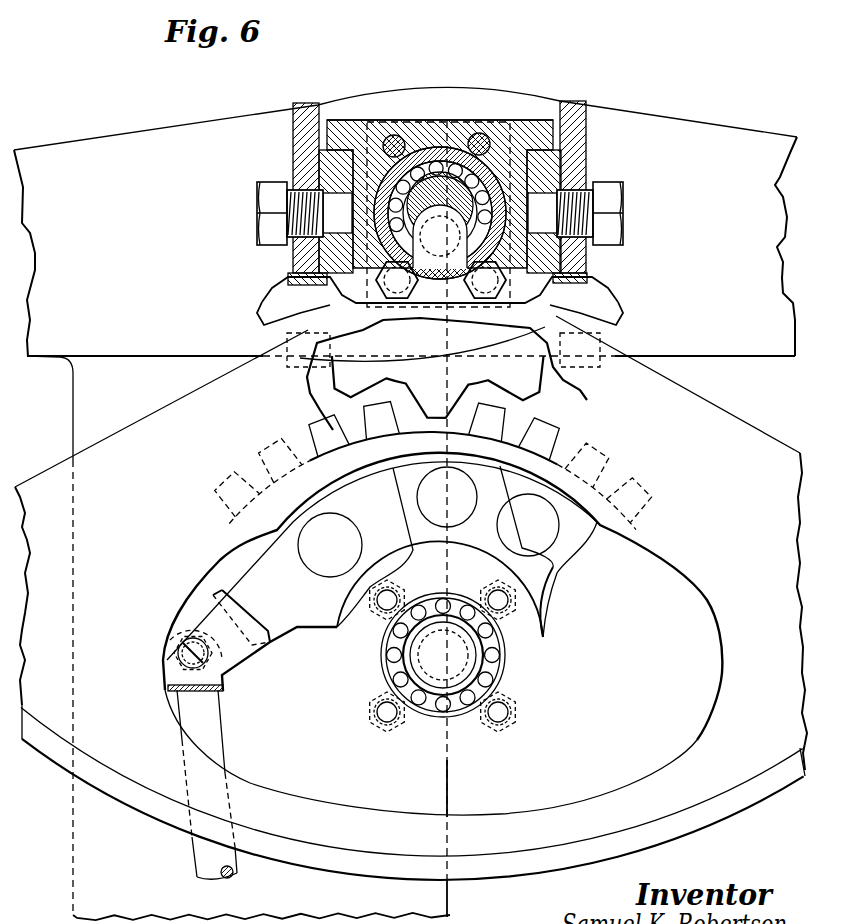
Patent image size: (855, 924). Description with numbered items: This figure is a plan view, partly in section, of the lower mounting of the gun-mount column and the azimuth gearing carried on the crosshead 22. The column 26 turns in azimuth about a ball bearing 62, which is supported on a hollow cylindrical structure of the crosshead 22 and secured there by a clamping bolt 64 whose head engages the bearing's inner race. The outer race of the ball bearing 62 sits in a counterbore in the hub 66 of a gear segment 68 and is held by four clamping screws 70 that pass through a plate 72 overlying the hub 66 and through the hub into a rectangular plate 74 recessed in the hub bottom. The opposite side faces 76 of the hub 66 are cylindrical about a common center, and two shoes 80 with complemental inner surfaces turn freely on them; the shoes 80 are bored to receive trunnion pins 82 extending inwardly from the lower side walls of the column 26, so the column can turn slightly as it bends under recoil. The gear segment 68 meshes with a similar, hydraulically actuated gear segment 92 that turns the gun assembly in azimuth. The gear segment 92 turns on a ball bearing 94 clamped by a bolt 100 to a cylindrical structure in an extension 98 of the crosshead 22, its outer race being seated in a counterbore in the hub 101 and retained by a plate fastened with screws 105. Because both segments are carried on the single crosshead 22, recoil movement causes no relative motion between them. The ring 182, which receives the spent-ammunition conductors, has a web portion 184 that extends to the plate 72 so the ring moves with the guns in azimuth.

The crosshead 22 is at (405, 222).
The column 26 is at (297, 118).
The ball bearing 62 is at (545, 178).
The clamping bolt 64 is at (487, 168).
The hub 66 is at (526, 130).
The gear segment 68 is at (438, 350).
The clamping screws 70 is at (478, 132).
The plate 72 is at (440, 276).
The rectangular plate 74 is at (391, 118).
The side faces 76 is at (352, 258).
The shoes 80 is at (330, 160).
The trunnion pins 82 is at (332, 205).
The gear segment 92 is at (433, 466).
The ball bearing 94 is at (417, 717).
The extension 98 is at (263, 803).
The bolt 100 is at (443, 655).
The hub 101 is at (540, 693).
The screws 105 is at (383, 697).
The ring 182 is at (563, 847).
The web portion 184 is at (411, 520).